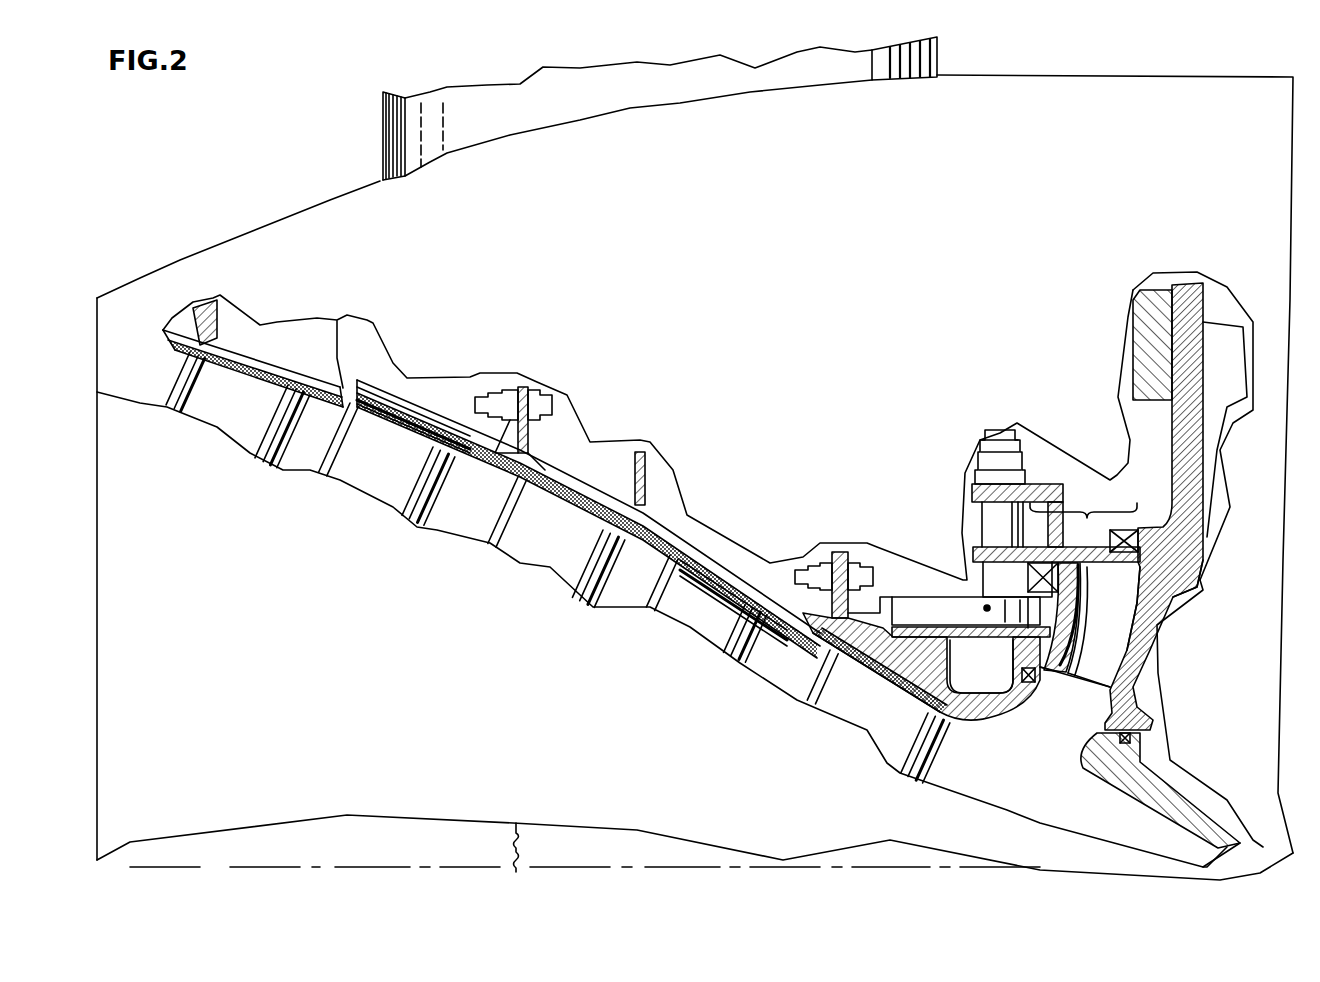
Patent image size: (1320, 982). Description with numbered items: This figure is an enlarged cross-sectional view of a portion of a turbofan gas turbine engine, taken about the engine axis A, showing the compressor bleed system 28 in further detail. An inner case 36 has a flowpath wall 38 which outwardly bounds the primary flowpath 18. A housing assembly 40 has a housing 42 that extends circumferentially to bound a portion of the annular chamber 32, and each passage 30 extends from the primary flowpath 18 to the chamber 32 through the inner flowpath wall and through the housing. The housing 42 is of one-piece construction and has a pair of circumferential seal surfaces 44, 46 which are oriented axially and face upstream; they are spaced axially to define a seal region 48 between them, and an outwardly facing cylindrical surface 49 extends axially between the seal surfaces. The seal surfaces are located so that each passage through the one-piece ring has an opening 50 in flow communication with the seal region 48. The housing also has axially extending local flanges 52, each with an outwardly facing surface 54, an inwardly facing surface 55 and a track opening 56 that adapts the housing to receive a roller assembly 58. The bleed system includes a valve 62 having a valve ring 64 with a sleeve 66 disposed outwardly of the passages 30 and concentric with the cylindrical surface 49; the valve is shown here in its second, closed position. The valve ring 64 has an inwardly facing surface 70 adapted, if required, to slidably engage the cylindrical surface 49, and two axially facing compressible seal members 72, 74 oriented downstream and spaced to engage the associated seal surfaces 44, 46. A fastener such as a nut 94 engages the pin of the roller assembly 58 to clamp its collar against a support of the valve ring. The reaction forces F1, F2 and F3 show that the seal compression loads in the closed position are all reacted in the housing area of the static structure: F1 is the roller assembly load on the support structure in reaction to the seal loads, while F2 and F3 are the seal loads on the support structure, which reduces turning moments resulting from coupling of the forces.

The primary flowpath 18 is at (318, 422).
The compressor bleed system 28 is at (1176, 635).
The passage 30 is at (1110, 669).
The annular chamber 32 is at (1164, 464).
The inner case 36 is at (788, 624).
The flowpath wall 38 is at (940, 720).
The housing assembly 40 is at (1208, 498).
The housing 42 is at (1185, 575).
The seal surface 44 is at (1132, 530).
The seal surface 46 is at (1078, 605).
The seal region 48 is at (1083, 499).
The cylindrical surface 49 is at (1078, 588).
The opening 50 is at (1100, 562).
The axially extending flange 52 is at (892, 583).
The outwardly facing surface 54 is at (942, 593).
The inwardly facing surface 55 is at (1025, 650).
The track opening 56 is at (878, 605).
The roller assembly 58 is at (965, 610).
The valve 62 is at (1023, 438).
The valve ring 64 is at (1042, 480).
The sleeve 66 is at (1097, 553).
The inwardly facing surface 70 is at (1199, 588).
The seal member 72 is at (1143, 550).
The seal member 74 is at (1057, 547).
The nut 94 is at (990, 466).
The reaction force F1 is at (988, 612).
The reaction force F2 is at (1110, 547).
The reaction force F3 is at (1027, 577).
The axis A is at (205, 866).